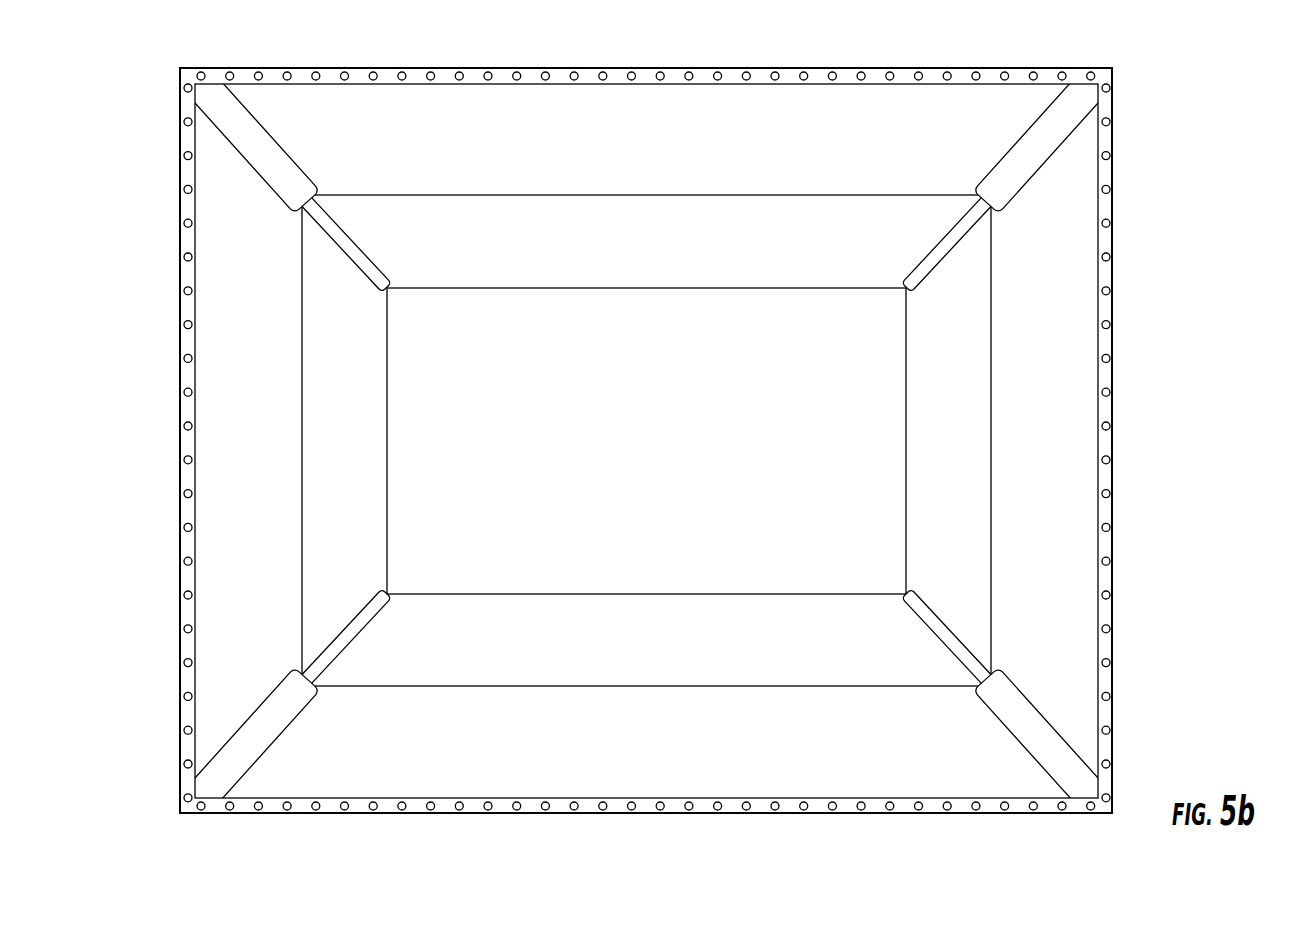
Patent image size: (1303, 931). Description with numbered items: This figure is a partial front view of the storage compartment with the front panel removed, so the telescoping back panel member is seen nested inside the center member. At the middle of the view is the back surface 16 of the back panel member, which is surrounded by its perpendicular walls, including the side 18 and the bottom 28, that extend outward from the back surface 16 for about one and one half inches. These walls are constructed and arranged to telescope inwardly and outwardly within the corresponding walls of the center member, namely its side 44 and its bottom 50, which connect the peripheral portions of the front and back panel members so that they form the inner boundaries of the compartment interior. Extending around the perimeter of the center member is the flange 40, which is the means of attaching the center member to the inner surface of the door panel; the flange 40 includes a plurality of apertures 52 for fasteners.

The back surface 16 is at (587, 503).
The side 18 is at (975, 295).
The bottom 28 is at (540, 663).
The flange 40 is at (421, 105).
The side 44 is at (646, 440).
The bottom 50 is at (670, 770).
The apertures 52 is at (1110, 425).